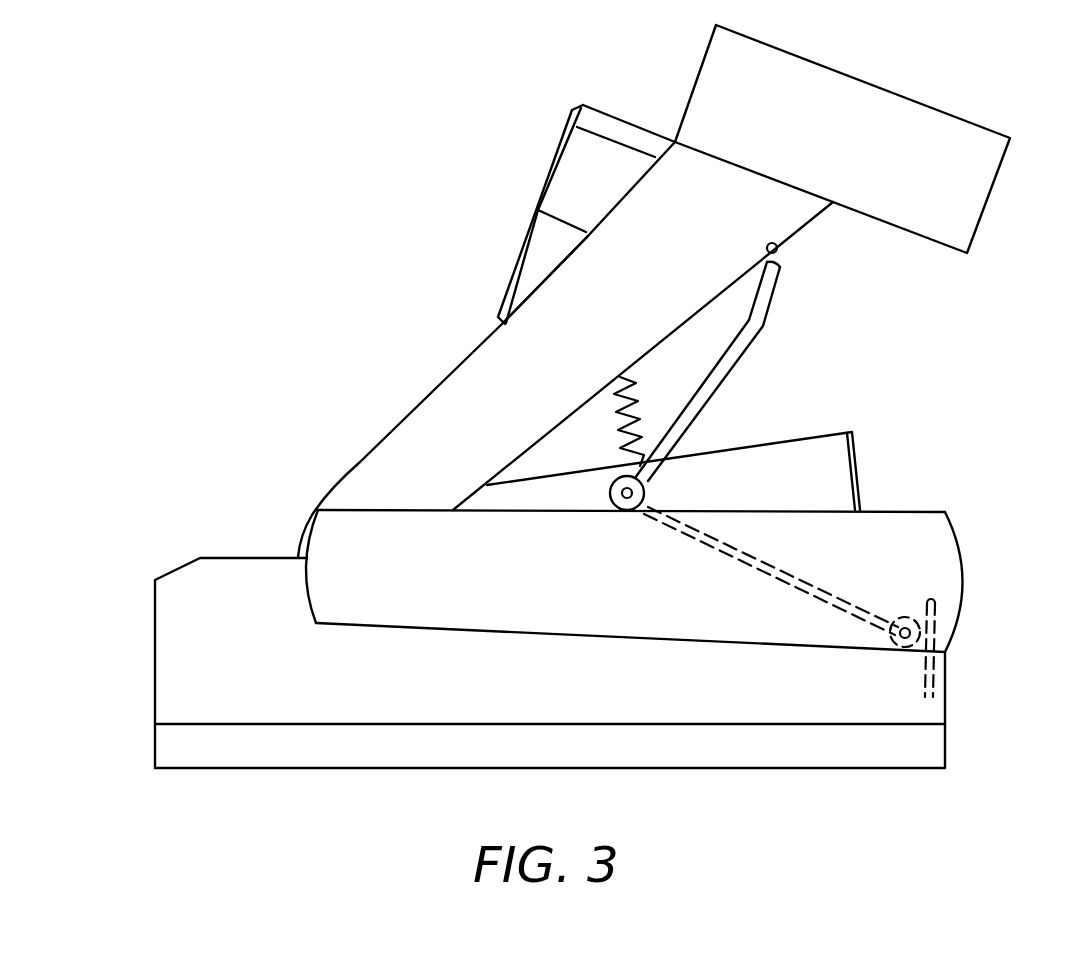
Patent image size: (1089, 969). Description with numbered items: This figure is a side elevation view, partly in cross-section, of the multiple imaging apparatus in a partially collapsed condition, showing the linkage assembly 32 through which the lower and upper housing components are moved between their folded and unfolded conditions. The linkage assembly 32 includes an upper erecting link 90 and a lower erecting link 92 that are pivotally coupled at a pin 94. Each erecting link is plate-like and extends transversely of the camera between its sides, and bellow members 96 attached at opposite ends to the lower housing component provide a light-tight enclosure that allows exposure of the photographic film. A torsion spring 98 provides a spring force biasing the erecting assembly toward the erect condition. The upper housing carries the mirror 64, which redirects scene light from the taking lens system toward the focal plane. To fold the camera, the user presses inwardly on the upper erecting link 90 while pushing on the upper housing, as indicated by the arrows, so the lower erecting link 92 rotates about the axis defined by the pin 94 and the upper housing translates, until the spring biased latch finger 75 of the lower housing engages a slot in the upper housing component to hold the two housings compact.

The linkage assembly 32 is at (748, 403).
The mirror 64 is at (770, 296).
The spring biased latch finger 75 is at (920, 628).
The upper erecting link 90 is at (752, 324).
The lower erecting link 92 is at (790, 590).
The pin pivot 94 is at (613, 502).
The bellow members 96 is at (585, 448).
The torsion spring 98 is at (613, 405).